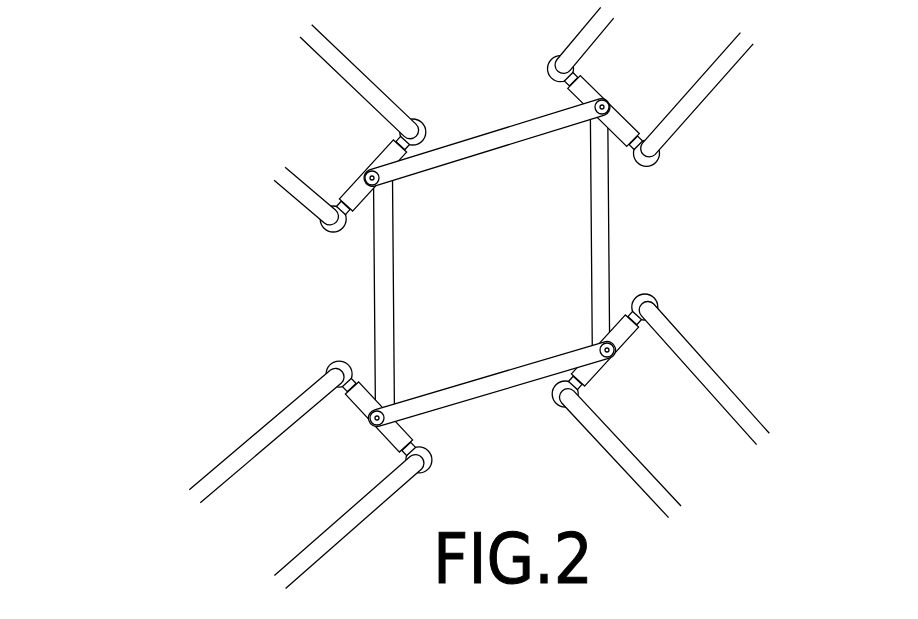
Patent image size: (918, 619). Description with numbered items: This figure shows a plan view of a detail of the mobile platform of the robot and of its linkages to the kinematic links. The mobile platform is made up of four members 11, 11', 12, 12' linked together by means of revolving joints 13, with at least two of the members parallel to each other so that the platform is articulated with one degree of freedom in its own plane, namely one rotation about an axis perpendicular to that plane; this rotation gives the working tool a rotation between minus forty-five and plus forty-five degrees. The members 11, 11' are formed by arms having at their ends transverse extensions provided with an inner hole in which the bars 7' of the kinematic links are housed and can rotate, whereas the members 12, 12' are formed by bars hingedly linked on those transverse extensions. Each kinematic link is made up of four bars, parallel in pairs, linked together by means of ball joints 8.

The bar 7' is at (720, 373).
The ball joint 8 is at (650, 297).
The member 11 is at (666, 228).
The member 11' is at (312, 298).
The member 12 is at (487, 99).
The member 12' is at (491, 423).
The revolving joint 13 is at (640, 133).